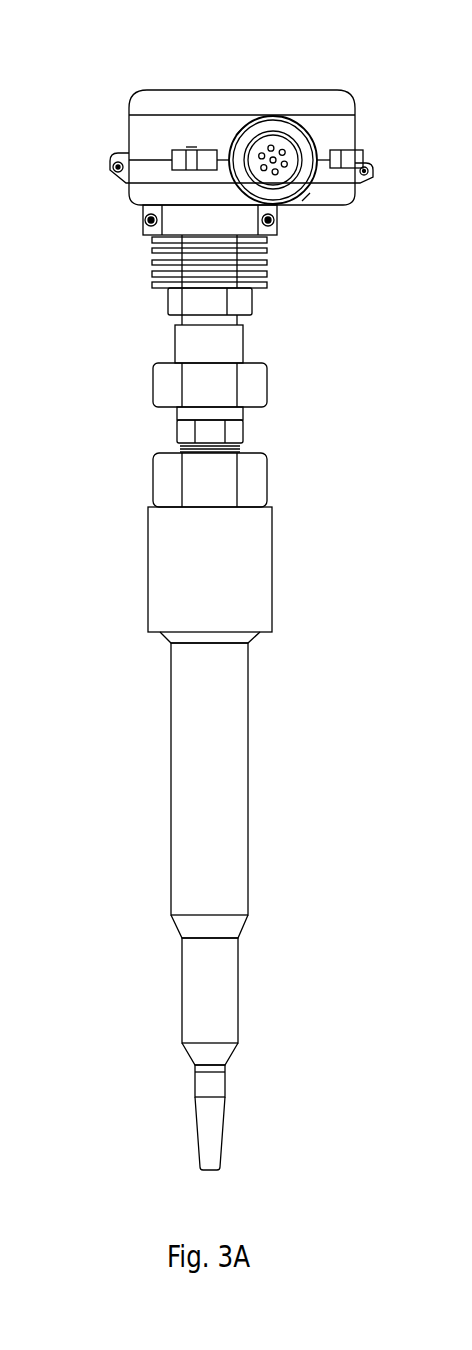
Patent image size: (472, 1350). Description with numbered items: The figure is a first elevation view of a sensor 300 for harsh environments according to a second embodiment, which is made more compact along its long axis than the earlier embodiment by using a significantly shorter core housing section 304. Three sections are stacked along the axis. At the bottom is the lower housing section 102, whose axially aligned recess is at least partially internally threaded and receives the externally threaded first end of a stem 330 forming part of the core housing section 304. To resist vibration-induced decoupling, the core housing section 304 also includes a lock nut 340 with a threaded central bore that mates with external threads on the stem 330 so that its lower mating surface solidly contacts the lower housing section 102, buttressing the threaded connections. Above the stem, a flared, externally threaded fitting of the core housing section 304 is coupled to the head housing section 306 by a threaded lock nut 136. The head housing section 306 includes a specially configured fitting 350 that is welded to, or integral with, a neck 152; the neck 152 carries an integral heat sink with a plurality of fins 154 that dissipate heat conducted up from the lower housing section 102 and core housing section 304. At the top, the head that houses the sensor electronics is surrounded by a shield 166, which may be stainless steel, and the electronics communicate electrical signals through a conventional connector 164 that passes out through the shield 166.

The sensor 300 is at (163, 78).
The shield 166 is at (307, 91).
The connector 164 is at (313, 172).
The fins 154 is at (267, 273).
The neck 152 is at (252, 307).
The fitting 350 is at (243, 357).
The lock nut 136 is at (267, 387).
The stem 330 is at (243, 432).
The lock nut 340 is at (267, 497).
The lower housing section 102 is at (100, 500).
The head housing section 306 is at (103, 93).
The core housing section 304 is at (103, 377).